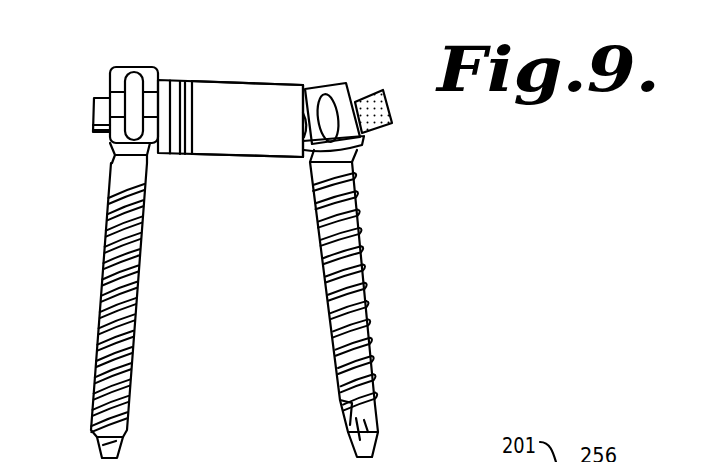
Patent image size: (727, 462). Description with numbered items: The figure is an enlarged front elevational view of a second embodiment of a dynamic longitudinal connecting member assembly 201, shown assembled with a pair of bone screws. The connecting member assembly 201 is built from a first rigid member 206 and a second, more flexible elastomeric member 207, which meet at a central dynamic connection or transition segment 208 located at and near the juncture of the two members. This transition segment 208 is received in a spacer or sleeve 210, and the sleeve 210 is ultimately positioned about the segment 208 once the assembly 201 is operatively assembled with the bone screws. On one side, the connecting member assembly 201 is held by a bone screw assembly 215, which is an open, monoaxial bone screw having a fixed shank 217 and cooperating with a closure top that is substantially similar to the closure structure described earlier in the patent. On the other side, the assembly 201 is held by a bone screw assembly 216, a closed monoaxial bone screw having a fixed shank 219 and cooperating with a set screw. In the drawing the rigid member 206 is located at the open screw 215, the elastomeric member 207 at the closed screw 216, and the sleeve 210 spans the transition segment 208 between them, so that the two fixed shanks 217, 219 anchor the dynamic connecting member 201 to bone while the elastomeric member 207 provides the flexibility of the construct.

The longitudinal connecting member assembly 201 is at (230, 110).
The first rigid member 206 is at (103, 132).
The second elastomeric member 207 is at (376, 128).
The transition segment 208 is at (214, 167).
The sleeve 210 is at (260, 146).
The open monoaxial bone screw assembly 215 is at (148, 67).
The closed monoaxial bone screw assembly 216 is at (340, 84).
The fixed shank 217 is at (116, 244).
The fixed shank 219 is at (375, 249).